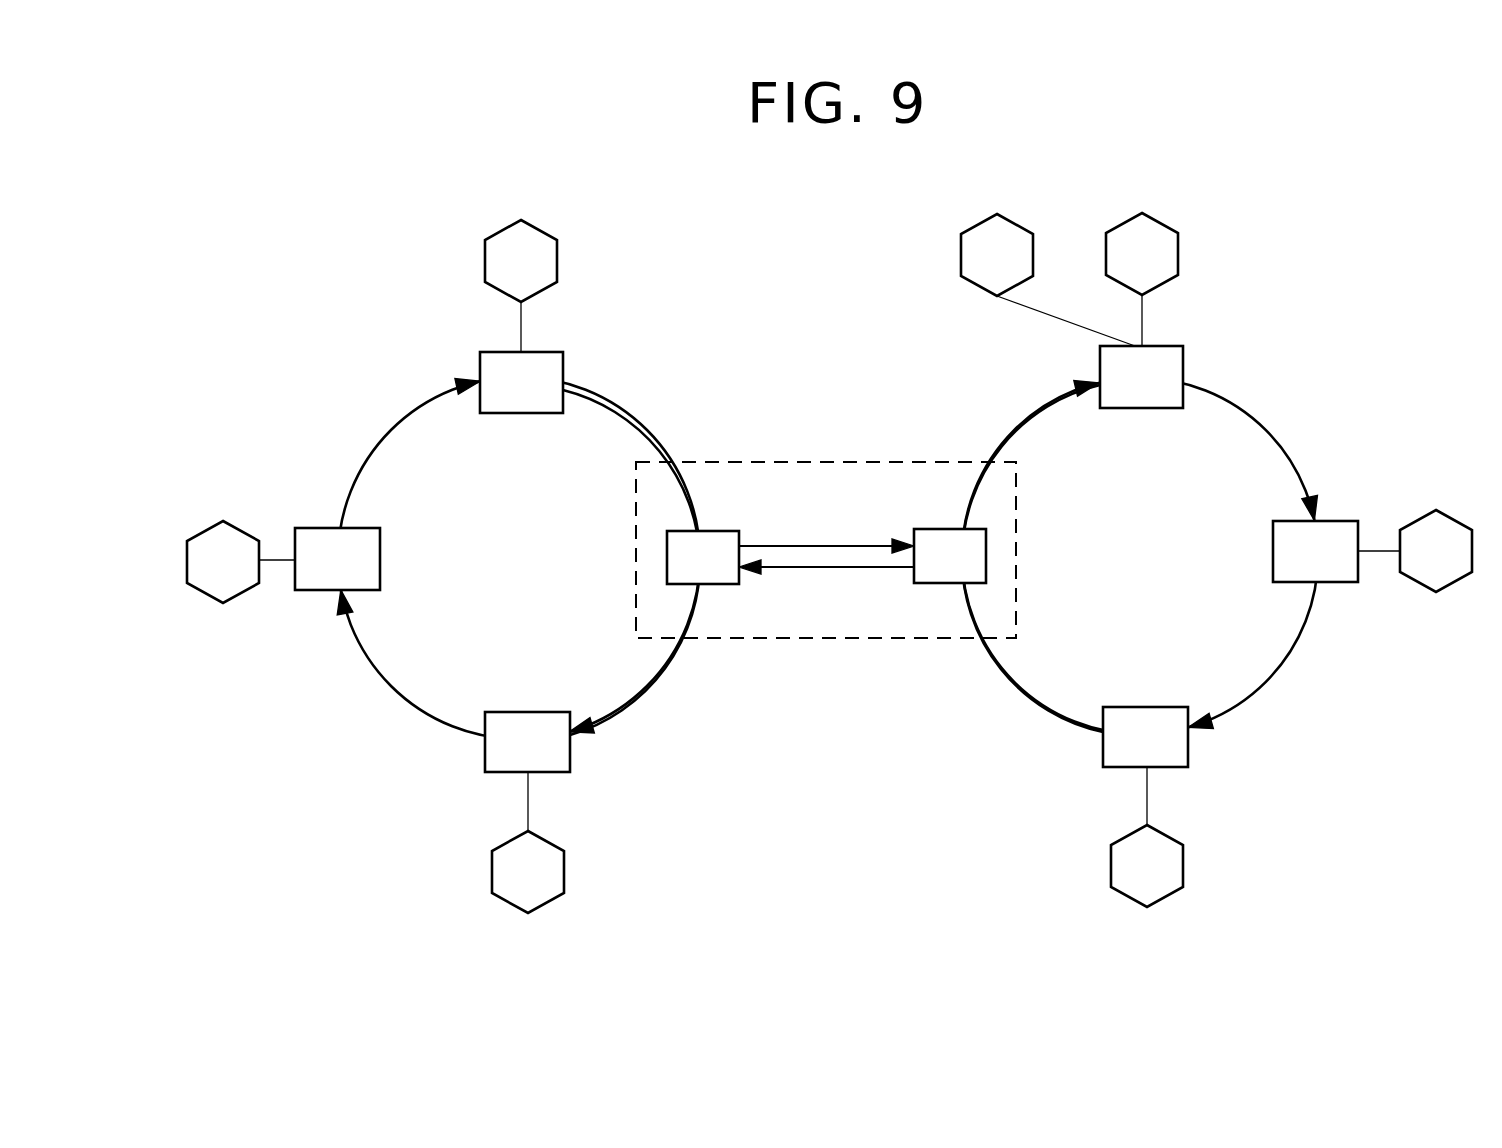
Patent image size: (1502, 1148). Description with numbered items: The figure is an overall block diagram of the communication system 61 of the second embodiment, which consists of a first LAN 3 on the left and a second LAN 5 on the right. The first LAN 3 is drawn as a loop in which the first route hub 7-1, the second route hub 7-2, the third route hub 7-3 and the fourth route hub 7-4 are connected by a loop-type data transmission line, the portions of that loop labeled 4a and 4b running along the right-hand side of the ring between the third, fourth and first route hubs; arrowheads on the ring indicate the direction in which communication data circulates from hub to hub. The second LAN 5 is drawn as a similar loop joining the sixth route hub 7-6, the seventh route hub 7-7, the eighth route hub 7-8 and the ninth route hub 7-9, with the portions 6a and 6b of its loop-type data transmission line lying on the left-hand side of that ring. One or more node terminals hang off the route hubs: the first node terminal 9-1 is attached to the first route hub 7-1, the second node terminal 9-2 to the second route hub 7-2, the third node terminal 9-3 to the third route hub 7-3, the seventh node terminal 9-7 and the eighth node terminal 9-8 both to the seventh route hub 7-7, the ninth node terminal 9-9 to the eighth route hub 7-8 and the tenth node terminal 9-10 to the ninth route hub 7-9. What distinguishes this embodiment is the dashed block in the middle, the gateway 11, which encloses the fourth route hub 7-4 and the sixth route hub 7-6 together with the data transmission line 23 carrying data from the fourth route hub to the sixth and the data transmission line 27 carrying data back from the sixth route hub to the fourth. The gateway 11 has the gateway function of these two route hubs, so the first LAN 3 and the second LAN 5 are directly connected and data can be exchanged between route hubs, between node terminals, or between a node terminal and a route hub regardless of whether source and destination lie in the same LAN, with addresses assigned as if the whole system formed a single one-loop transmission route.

The first LAN 3 is at (606, 348).
The second LAN 5 is at (1281, 378).
The communication system 61 is at (810, 338).
The gateway 11 is at (823, 458).
The data transmission line 23 is at (806, 545).
The data transmission line 27 is at (830, 568).
The ring transmission path segment 4a is at (650, 421).
The ring transmission path segment 4b is at (650, 690).
The ring transmission path segment 6a is at (1010, 440).
The ring transmission path segment 6b is at (1012, 688).
The route hub 7-1 is at (570, 752).
The route hub 7-2 is at (320, 527).
The route hub 7-3 is at (480, 368).
The route hub 7-4 is at (735, 508).
The route hub 7-6 is at (938, 528).
The route hub 7-7 is at (1160, 346).
The route hub 7-8 is at (1332, 520).
The route hub 7-9 is at (1188, 745).
The node terminal 9-1 is at (565, 880).
The node terminal 9-2 is at (212, 522).
The node terminal 9-3 is at (540, 232).
The node terminal 9-7 is at (1012, 222).
The node terminal 9-8 is at (1160, 222).
The node terminal 9-9 is at (1450, 512).
The node terminal 9-10 is at (1183, 865).